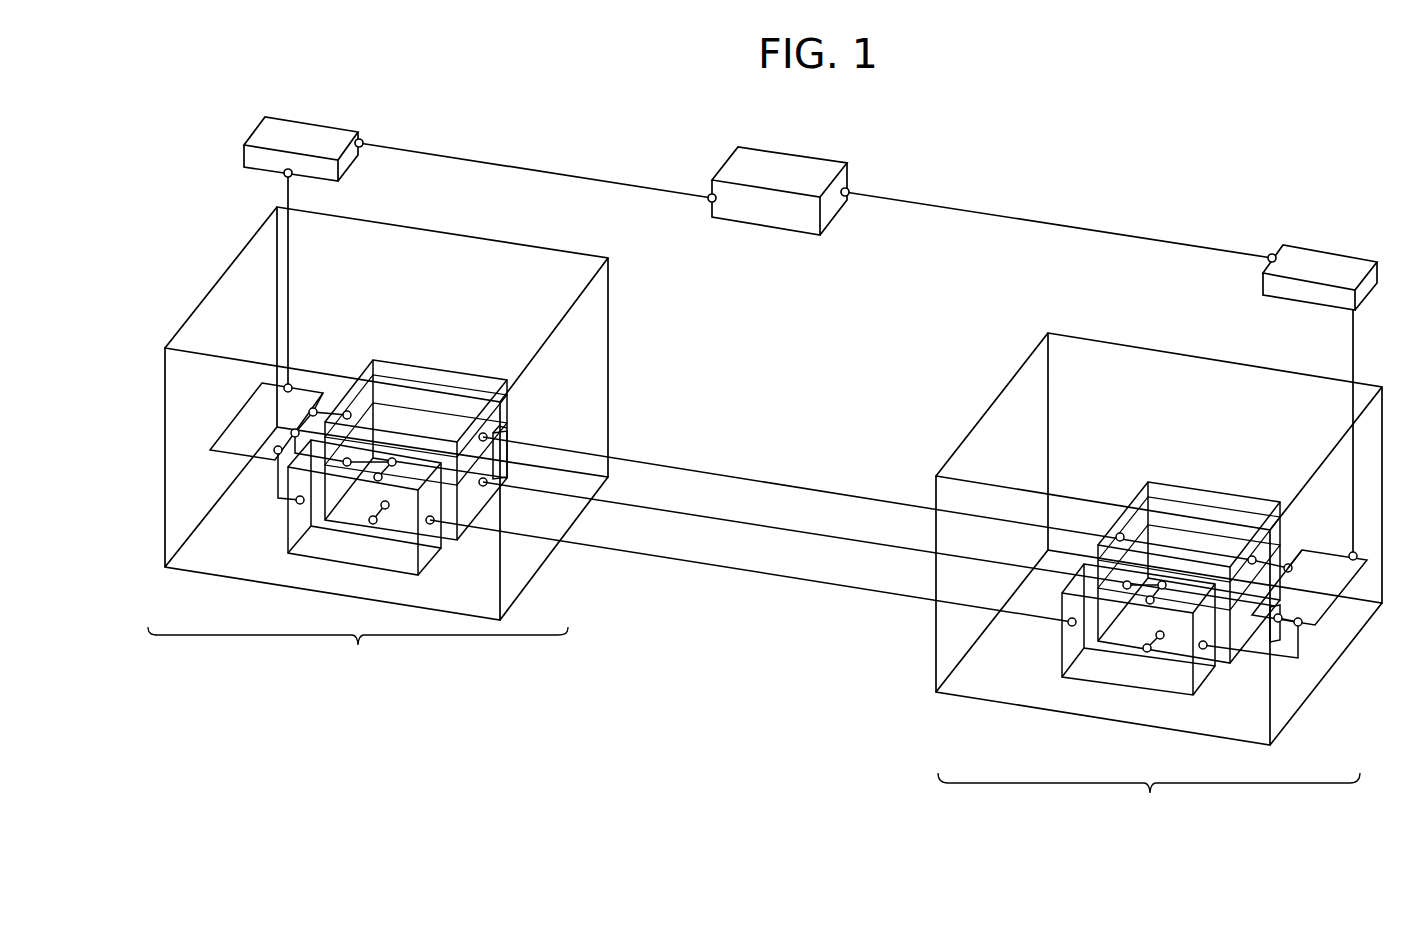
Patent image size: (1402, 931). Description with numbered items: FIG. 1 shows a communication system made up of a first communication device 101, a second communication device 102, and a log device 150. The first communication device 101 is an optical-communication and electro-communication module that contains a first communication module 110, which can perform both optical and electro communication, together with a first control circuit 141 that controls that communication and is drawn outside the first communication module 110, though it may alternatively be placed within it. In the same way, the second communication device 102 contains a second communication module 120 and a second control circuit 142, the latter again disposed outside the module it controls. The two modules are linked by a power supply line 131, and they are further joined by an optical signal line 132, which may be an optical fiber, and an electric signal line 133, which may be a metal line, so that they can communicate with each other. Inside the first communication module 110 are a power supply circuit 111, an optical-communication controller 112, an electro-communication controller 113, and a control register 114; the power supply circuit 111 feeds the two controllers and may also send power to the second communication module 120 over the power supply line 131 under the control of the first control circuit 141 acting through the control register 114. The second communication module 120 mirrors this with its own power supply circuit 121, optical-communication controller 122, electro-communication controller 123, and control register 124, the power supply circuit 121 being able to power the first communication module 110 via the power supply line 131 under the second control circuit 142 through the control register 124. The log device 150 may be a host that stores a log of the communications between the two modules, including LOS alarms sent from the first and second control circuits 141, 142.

The first communication device 101 is at (358, 651).
The second communication device 102 is at (1149, 798).
The first communication module 110 is at (367, 221).
The power supply circuit 111 is at (418, 576).
The optical-communication controller 112 is at (396, 337).
The electro-communication controller 113 is at (507, 450).
The control register 114 is at (248, 404).
The second communication module 120 is at (1104, 347).
The power supply circuit 121 is at (1194, 696).
The optical-communication controller 122 is at (1160, 483).
The electro-communication controller 123 is at (1240, 655).
The control register 124 is at (1302, 550).
The power supply line 131 is at (788, 576).
The optical signal line 132 is at (788, 483).
The electric signal line 133 is at (788, 529).
The first control circuit 141 is at (351, 132).
The second control circuit 142 is at (1262, 296).
The log device 150 is at (780, 150).